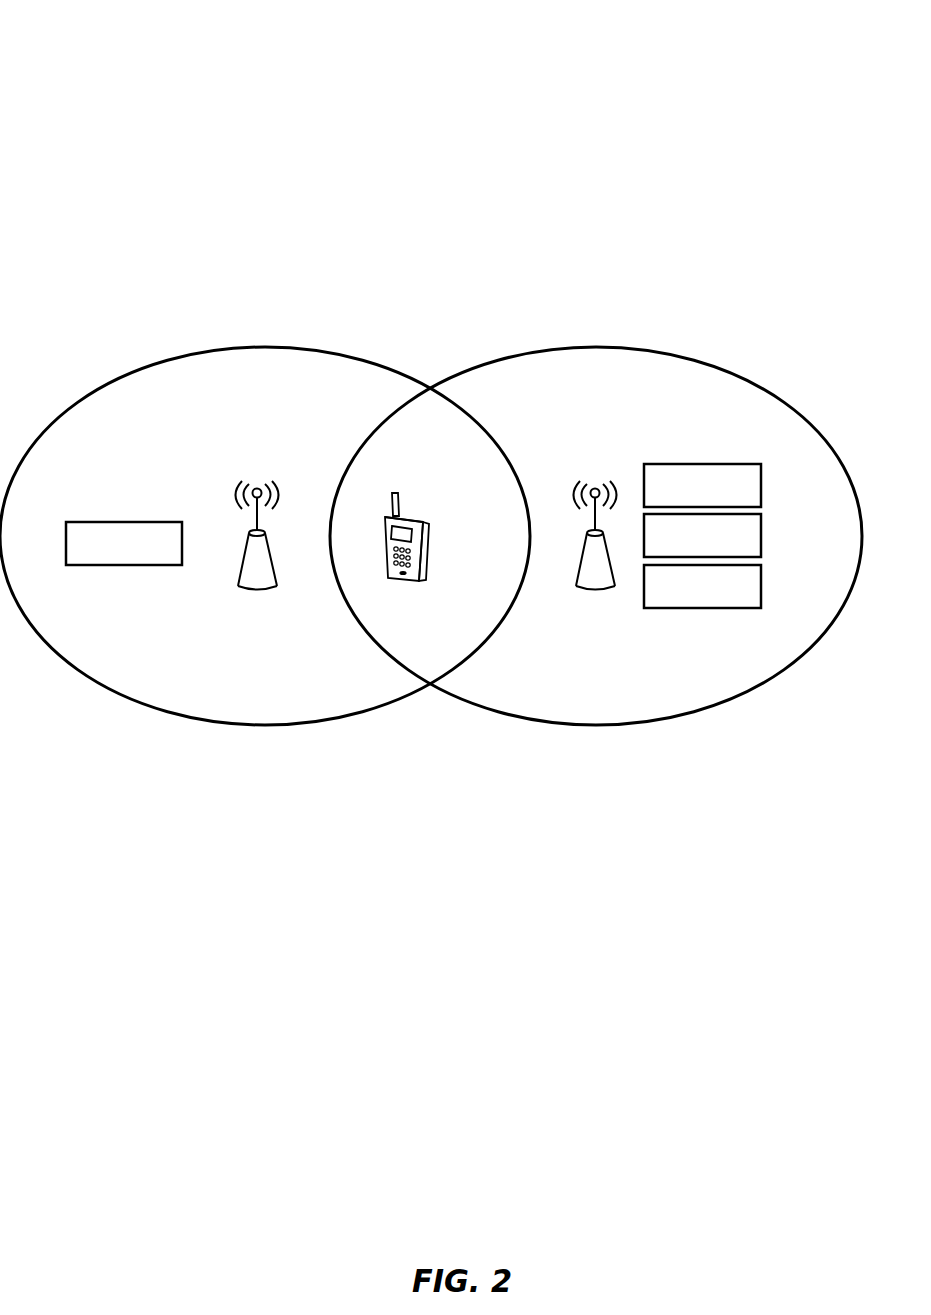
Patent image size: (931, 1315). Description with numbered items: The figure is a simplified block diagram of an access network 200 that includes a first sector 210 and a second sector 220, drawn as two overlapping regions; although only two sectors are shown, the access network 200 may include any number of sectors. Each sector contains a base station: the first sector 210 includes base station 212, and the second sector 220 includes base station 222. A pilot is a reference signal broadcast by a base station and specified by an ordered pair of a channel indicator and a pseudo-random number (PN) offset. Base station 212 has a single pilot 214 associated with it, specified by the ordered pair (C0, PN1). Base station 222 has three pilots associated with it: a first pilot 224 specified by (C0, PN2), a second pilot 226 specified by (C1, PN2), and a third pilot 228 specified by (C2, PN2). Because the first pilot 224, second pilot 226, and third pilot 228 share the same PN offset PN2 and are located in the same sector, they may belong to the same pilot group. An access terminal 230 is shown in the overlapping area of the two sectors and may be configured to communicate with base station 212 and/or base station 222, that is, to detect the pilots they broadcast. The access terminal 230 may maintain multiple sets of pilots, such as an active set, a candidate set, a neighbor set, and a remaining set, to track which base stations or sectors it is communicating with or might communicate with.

The access network 200 is at (150, 78).
The first sector 210 is at (262, 347).
The base station 212 is at (264, 592).
The single pilot 214 is at (100, 522).
The second sector 220 is at (607, 347).
The base station 222 is at (601, 592).
The first pilot 224 is at (761, 482).
The second pilot 226 is at (761, 535).
The third pilot 228 is at (761, 587).
The access terminal 230 is at (420, 516).